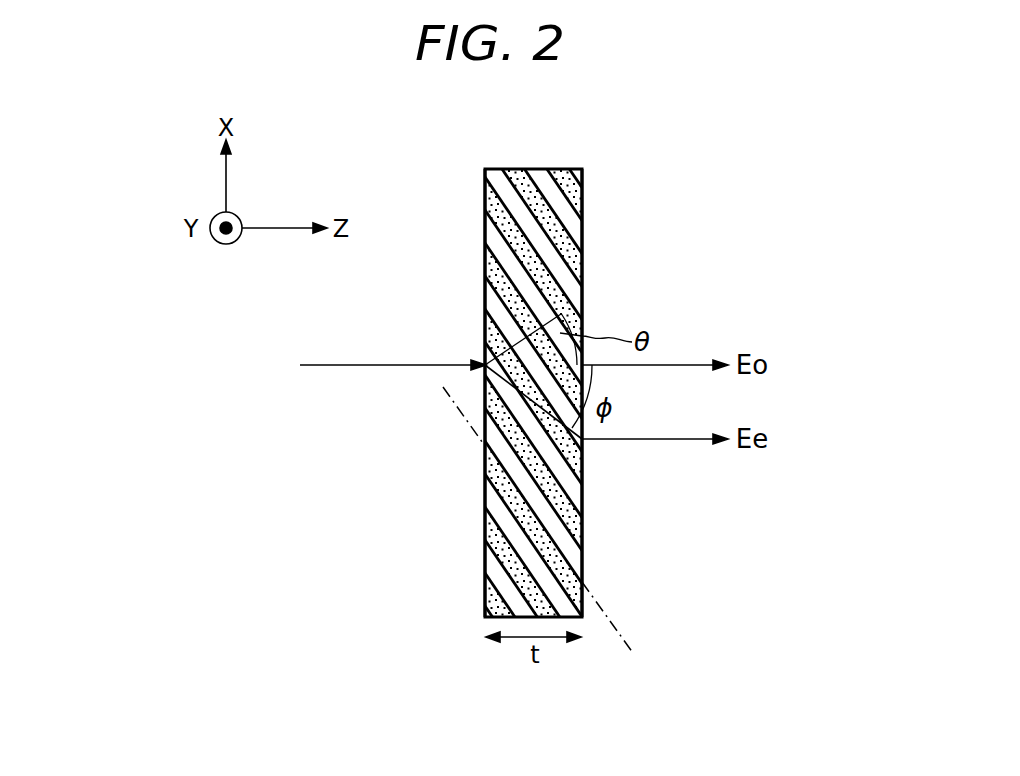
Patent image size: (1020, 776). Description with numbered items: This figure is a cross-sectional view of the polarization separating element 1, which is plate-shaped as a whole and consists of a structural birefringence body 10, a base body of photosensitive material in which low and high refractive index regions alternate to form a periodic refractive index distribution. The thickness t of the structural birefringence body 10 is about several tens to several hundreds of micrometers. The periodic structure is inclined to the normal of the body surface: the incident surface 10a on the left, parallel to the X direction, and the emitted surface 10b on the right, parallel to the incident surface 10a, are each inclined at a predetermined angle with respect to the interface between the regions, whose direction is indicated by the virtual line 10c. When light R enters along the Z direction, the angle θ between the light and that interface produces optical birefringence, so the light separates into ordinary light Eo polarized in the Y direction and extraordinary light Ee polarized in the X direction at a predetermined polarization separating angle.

The polarization separating element 1 is at (311, 312).
The structural birefringence body 10 is at (594, 280).
The incident surface 10a is at (485, 220).
The emitted surface 10b is at (582, 243).
The virtual line 10c is at (610, 612).